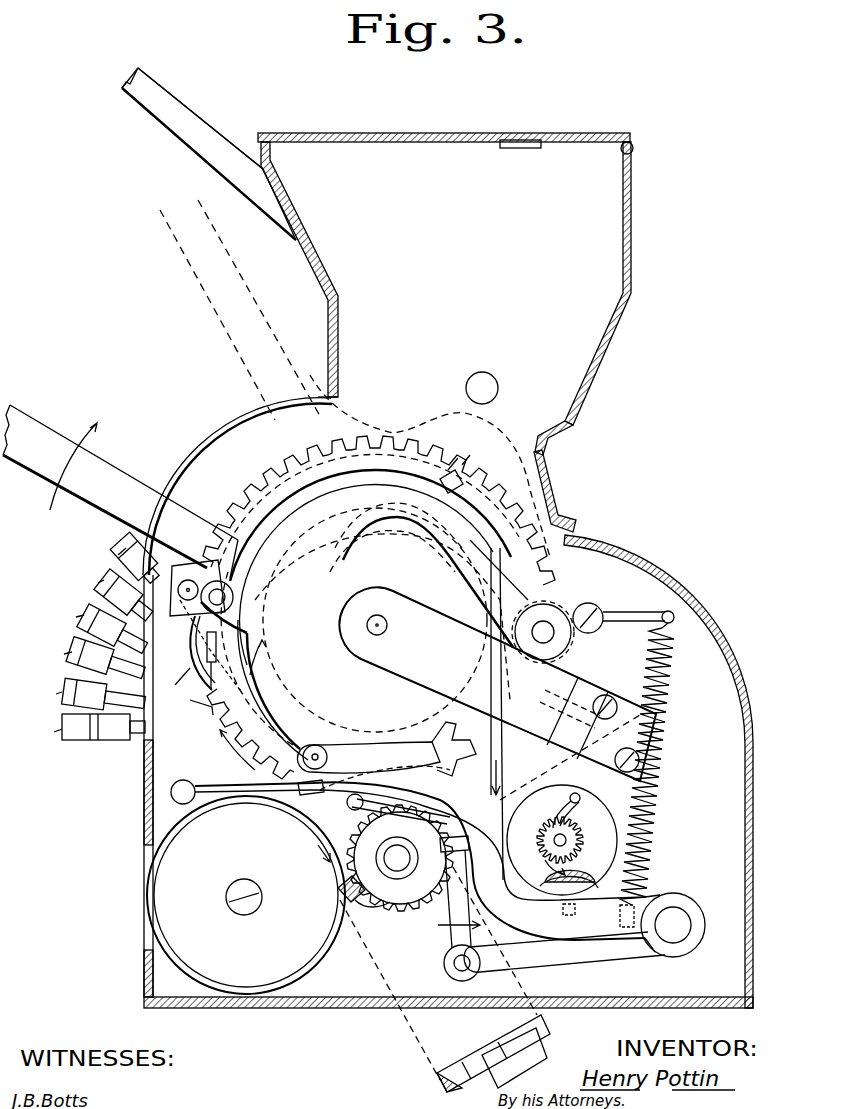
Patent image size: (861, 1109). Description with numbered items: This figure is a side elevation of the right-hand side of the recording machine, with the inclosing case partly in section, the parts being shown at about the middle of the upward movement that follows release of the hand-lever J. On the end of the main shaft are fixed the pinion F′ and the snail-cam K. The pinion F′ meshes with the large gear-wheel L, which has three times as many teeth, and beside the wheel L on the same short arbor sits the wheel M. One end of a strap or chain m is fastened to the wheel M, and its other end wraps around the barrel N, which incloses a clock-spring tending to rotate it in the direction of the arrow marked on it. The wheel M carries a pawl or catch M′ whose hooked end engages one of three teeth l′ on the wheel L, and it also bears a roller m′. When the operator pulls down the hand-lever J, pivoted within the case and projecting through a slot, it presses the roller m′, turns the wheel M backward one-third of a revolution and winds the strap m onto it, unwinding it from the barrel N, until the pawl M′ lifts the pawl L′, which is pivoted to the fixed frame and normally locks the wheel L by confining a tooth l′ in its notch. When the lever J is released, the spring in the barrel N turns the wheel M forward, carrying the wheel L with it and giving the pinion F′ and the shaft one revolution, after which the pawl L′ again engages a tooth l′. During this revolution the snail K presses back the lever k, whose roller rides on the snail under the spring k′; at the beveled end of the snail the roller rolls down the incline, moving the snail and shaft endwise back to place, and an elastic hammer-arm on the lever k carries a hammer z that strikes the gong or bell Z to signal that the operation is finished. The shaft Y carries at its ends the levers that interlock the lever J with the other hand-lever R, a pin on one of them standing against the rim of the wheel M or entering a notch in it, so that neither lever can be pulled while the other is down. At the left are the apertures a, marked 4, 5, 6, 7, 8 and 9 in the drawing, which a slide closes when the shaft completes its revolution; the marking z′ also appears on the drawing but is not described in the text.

The lever R is at (221, 244).
The hand-lever J is at (134, 467).
The large gear-wheel L is at (379, 607).
The teeth l′ is at (338, 569).
The roller m′ is at (213, 625).
The pawl or catch M′ is at (187, 665).
The wheel M is at (492, 684).
The hammer z is at (387, 625).
The spring k′ is at (647, 764).
The strap or chain m is at (508, 714).
The bell or gong Z is at (246, 895).
The pivot pin z′ is at (349, 808).
The pawl L′ is at (401, 804).
The snail-cam K is at (400, 858).
The pinion F′ is at (395, 849).
The lever k is at (454, 908).
The barrel N is at (570, 856).
The shaft Y is at (584, 932).
The apertures a is at (88, 748).
The chute 4 is at (115, 551).
The chute 5 is at (95, 581).
The chute 6 is at (74, 616).
The chute 7 is at (62, 653).
The chute 8 is at (53, 693).
The chute 9 is at (52, 733).